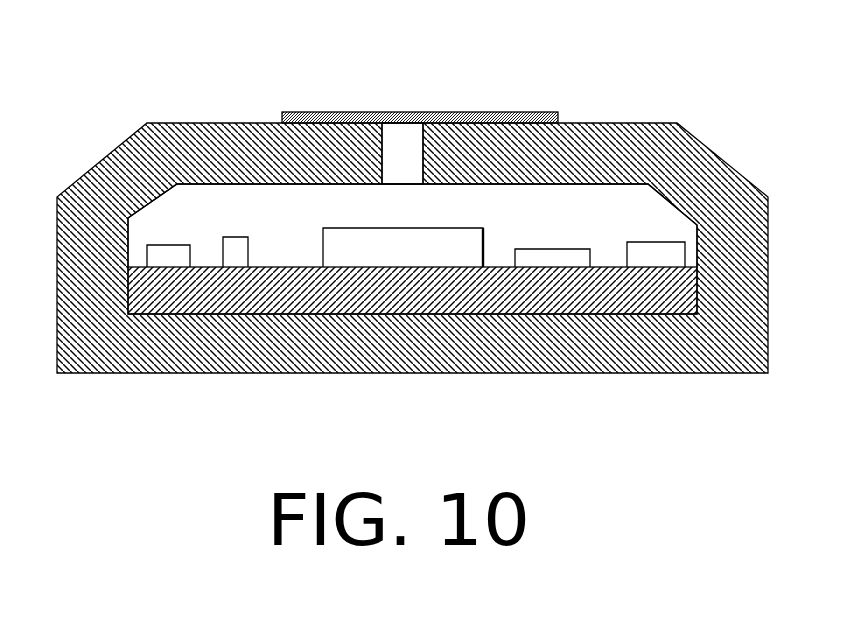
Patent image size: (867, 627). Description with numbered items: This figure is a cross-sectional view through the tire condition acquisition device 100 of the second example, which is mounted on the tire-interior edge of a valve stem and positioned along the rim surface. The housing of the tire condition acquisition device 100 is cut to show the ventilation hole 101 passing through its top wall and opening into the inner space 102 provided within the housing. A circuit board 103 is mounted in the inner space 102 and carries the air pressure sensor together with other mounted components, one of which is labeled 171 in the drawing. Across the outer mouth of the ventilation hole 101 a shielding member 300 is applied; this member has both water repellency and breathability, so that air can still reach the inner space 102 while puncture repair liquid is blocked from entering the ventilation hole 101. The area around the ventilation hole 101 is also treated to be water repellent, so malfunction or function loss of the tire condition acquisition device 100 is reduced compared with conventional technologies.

The tire condition acquisition device 100 is at (172, 123).
The ventilation hole 101 is at (406, 122).
The shielding member 300 is at (525, 112).
The inner space 102 is at (510, 200).
The electronic component (chip) 171 is at (363, 228).
The circuit board 103 is at (460, 295).